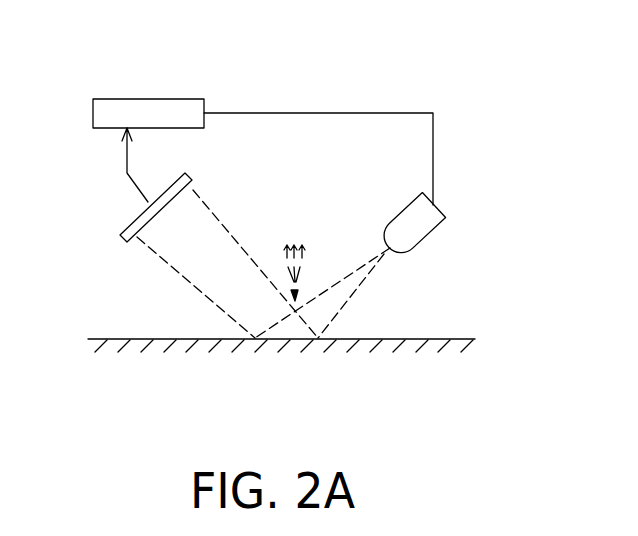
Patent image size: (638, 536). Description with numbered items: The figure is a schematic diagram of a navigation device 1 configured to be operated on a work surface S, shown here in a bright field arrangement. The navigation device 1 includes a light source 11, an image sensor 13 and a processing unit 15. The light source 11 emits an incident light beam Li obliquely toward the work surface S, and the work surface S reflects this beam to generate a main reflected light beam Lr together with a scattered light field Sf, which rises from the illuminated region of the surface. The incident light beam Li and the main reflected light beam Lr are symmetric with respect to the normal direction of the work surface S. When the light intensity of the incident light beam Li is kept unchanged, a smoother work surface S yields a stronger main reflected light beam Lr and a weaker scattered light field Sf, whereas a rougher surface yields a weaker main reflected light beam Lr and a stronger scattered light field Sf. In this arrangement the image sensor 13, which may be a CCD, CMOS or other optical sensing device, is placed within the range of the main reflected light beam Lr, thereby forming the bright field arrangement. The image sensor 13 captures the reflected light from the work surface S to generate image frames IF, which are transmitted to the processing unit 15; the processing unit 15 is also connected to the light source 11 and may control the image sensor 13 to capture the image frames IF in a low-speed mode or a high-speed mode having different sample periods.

The navigation device 1 is at (486, 77).
The light source 11 is at (431, 232).
The image sensor 13 is at (118, 237).
The processing unit 15 is at (137, 99).
The work surface S is at (422, 338).
The incident light beam Li is at (354, 282).
The main reflected light beam Lr is at (233, 258).
The scattered light field Sf is at (292, 256).
The image frames IF is at (105, 165).